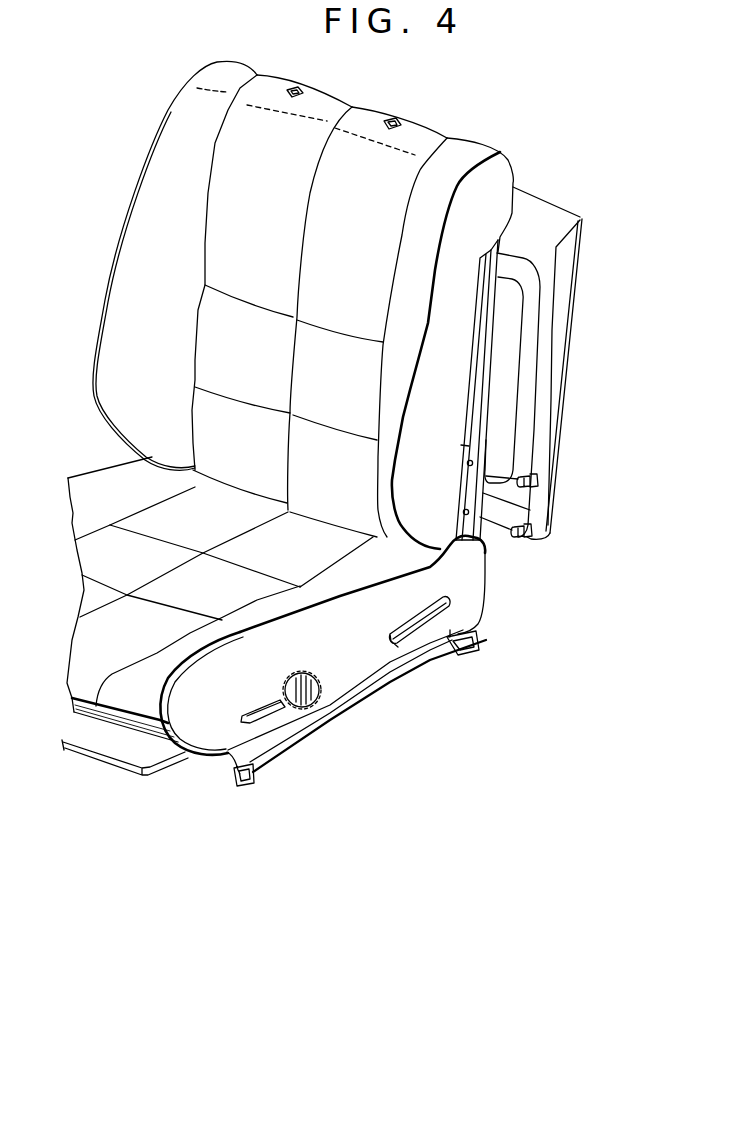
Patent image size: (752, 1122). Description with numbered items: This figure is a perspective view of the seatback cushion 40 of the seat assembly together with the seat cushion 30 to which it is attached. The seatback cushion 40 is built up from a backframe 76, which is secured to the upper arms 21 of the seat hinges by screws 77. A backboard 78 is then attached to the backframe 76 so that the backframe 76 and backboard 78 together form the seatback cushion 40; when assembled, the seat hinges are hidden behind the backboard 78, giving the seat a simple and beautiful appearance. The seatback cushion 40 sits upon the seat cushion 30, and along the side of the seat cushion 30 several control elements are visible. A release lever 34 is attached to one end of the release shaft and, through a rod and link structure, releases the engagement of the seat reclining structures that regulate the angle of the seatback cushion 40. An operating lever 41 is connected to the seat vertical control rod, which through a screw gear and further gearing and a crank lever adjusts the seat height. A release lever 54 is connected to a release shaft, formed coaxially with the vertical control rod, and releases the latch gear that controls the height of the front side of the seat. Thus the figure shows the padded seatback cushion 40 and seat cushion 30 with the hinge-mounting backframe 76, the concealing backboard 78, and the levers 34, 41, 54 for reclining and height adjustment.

The seat cushion 30 is at (87, 474).
The seatback cushion 40 is at (123, 220).
The upper arms 21 is at (466, 496).
The backframe 76 is at (485, 354).
The screws 77 is at (538, 482).
The backboard 78 is at (560, 306).
The operating lever 41 is at (306, 672).
The release lever 54 is at (250, 716).
The release lever 34 is at (421, 622).